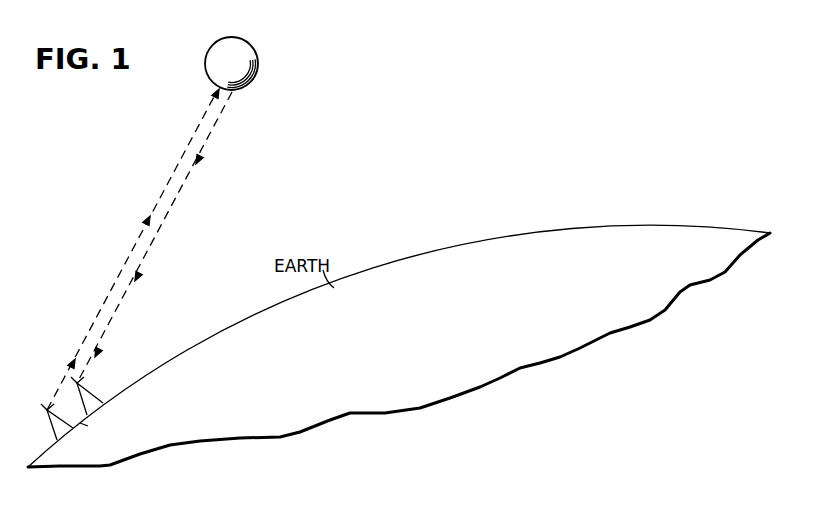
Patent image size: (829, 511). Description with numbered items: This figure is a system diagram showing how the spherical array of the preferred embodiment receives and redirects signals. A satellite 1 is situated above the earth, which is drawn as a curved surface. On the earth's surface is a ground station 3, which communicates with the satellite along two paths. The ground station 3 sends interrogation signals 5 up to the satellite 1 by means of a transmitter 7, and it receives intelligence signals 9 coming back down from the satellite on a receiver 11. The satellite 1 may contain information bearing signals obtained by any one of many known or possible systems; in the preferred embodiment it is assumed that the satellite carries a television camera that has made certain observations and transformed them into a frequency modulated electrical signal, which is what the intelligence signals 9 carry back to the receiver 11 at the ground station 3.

The satellite 1 is at (258, 62).
The ground station 3 is at (83, 425).
The interrogation signals 5 is at (178, 164).
The transmitter 7 is at (45, 412).
The intelligence signals 9 is at (214, 128).
The receiver 11 is at (90, 402).